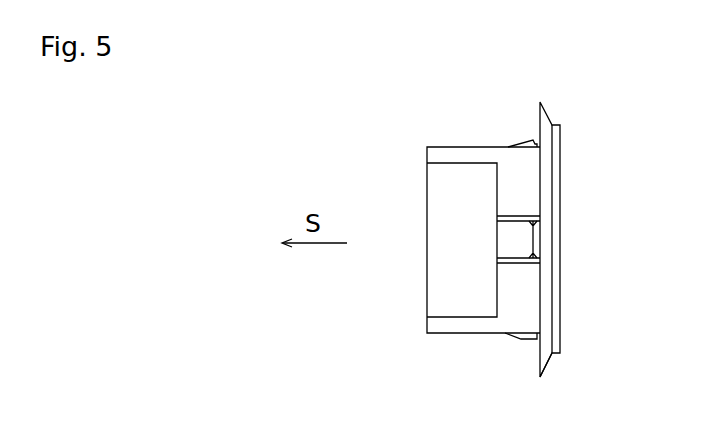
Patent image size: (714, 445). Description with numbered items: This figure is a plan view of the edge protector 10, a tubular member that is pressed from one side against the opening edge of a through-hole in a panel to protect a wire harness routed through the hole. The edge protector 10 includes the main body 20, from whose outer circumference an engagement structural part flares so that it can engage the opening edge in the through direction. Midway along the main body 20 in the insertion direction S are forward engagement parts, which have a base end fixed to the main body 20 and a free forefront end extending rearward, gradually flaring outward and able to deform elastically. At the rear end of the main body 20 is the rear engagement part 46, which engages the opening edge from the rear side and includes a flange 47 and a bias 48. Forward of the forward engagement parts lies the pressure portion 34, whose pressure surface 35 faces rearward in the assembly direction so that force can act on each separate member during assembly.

The edge protector 10 is at (370, 152).
The main body 20 is at (424, 188).
The pressure portion 34 is at (397, 240).
The pressure surface 35 is at (447, 286).
The rear engagement part 46 is at (575, 250).
The flange 47 is at (555, 355).
The bias 48 is at (545, 368).